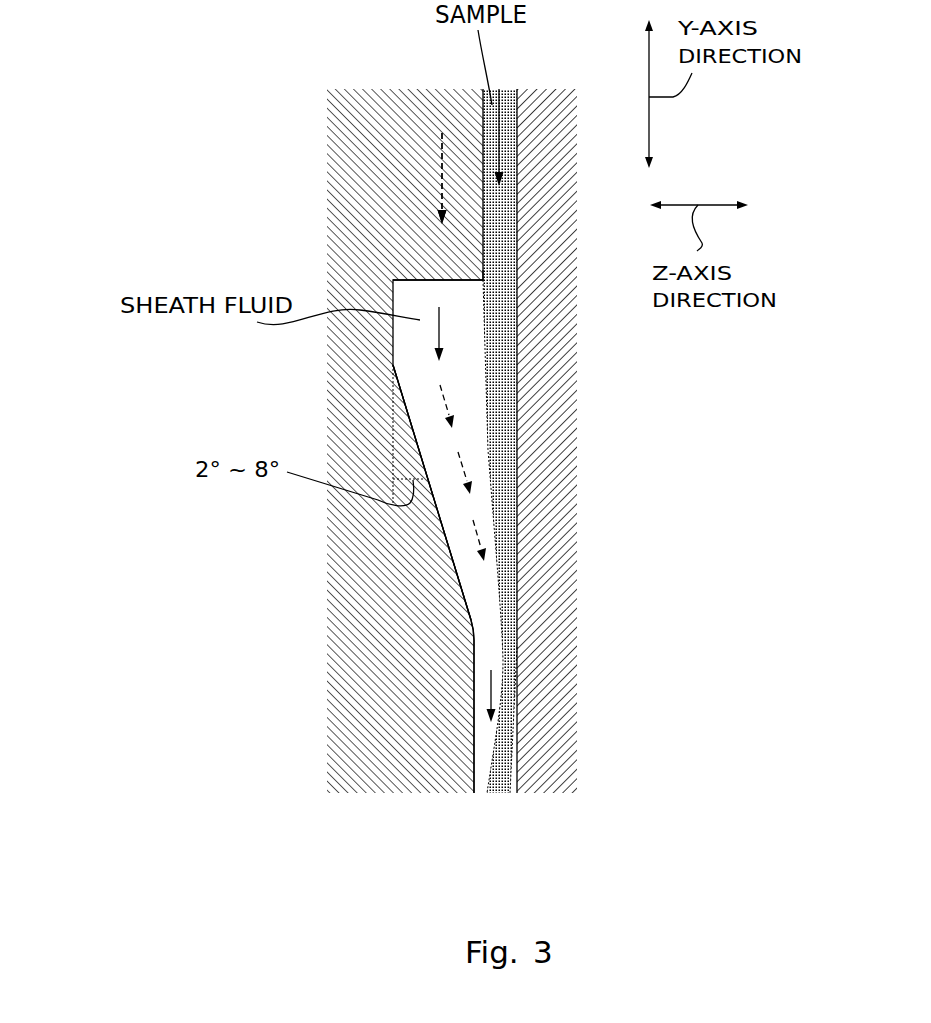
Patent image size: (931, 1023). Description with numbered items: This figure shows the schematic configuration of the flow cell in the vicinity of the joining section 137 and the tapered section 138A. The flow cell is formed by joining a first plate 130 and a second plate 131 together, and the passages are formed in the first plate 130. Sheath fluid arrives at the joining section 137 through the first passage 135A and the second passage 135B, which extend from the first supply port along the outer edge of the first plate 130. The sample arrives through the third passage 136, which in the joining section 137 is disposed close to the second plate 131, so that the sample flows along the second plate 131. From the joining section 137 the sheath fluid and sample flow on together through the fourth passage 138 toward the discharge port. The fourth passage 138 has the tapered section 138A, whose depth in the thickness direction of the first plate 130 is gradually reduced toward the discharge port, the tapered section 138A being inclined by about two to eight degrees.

The first plate 130 is at (355, 113).
The second plate 131 is at (550, 113).
The first passage 135A is at (440, 220).
The second passage 135B is at (440, 220).
The third passage 136 is at (502, 128).
The joining section 137 is at (463, 267).
The fourth passage 138 is at (450, 507).
The tapered section 138A is at (410, 440).